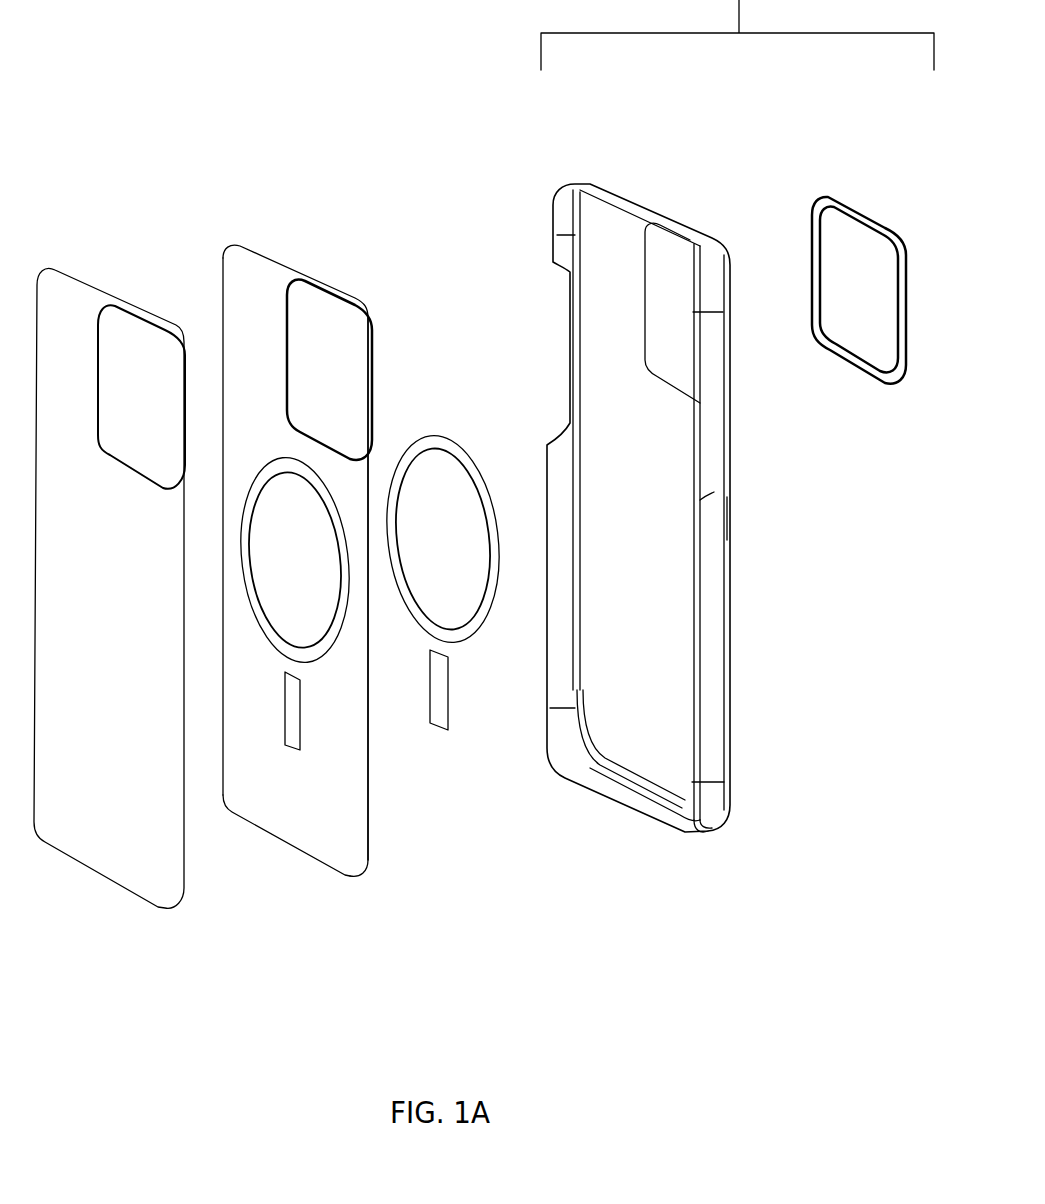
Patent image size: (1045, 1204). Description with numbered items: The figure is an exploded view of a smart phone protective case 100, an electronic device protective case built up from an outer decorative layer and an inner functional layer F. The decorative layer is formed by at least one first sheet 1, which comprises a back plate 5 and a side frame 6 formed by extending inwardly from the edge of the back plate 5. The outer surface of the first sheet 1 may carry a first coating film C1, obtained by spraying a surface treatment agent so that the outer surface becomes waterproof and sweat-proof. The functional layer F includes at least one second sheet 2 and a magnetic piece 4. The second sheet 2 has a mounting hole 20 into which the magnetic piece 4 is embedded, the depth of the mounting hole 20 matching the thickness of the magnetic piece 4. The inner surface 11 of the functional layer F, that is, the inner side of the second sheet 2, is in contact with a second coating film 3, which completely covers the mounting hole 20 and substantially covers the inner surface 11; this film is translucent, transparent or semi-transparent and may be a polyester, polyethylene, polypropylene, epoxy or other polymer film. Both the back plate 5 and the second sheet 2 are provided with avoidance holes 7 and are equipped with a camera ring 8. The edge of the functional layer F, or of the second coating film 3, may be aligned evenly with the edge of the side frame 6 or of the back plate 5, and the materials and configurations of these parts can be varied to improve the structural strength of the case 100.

The smart phone protective case 100 is at (213, 30).
The first sheet 1 is at (638, 508).
The second sheet 2 is at (316, 235).
The second coating film 3 is at (103, 250).
The magnetic piece 4 is at (400, 488).
The back plate 5 is at (648, 710).
The side frame 6 is at (713, 608).
The avoidance hole 7 is at (660, 355).
The camera ring 8 is at (883, 175).
The inner surface 11 is at (310, 805).
The mounting hole 20 is at (308, 660).
The first coating film C1 is at (727, 540).
The functional layer F is at (510, 893).